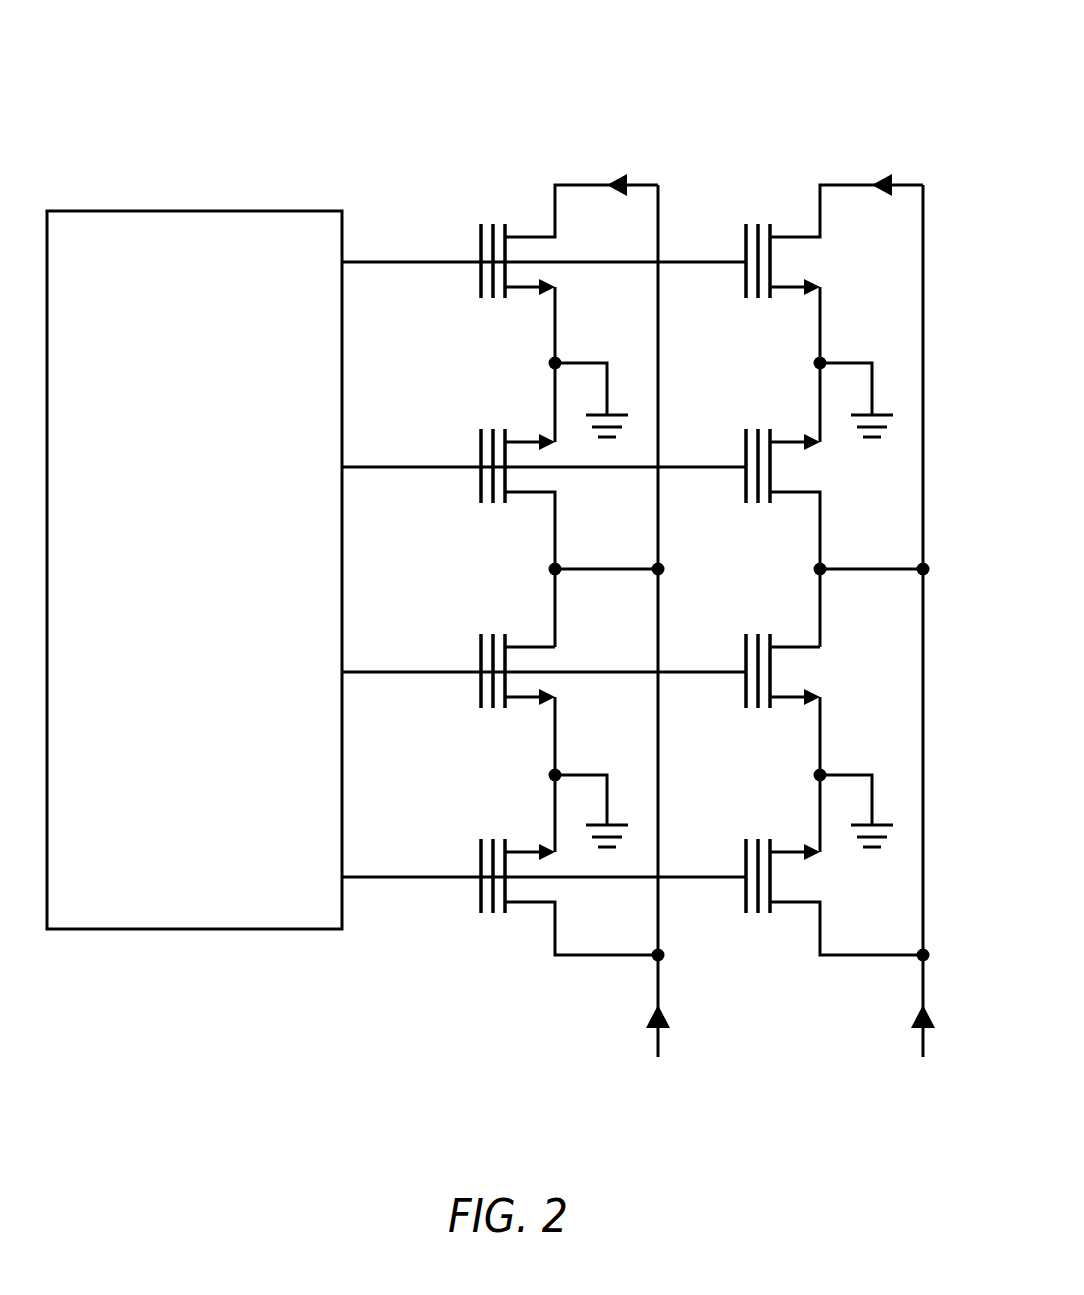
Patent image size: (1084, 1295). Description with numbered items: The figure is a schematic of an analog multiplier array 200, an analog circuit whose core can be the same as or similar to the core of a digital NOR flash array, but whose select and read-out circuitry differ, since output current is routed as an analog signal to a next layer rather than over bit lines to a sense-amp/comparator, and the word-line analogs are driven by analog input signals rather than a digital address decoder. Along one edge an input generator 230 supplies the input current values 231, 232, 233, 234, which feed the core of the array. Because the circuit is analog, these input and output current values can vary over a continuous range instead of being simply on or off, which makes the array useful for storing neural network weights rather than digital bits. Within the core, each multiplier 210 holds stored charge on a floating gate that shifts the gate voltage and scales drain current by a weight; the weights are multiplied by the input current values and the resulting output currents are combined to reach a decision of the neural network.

The analog multiplier array 200 is at (822, 78).
The multiplier 210 is at (505, 170).
The input generator 230 is at (162, 950).
The input current value 231 is at (427, 223).
The input current value 232 is at (427, 428).
The input current value 233 is at (427, 633).
The input current value 234 is at (427, 838).